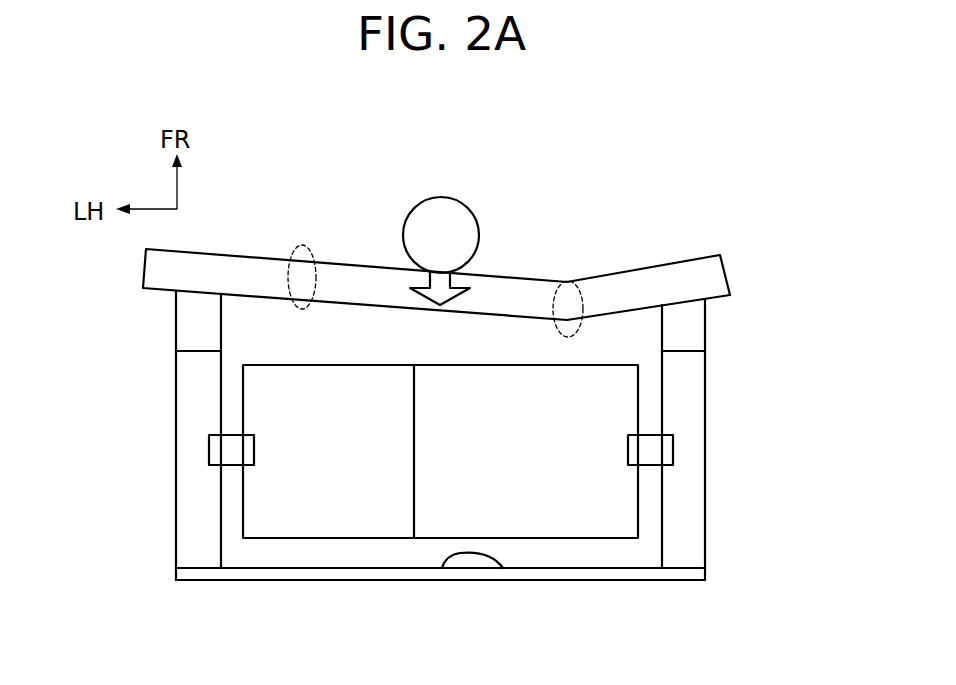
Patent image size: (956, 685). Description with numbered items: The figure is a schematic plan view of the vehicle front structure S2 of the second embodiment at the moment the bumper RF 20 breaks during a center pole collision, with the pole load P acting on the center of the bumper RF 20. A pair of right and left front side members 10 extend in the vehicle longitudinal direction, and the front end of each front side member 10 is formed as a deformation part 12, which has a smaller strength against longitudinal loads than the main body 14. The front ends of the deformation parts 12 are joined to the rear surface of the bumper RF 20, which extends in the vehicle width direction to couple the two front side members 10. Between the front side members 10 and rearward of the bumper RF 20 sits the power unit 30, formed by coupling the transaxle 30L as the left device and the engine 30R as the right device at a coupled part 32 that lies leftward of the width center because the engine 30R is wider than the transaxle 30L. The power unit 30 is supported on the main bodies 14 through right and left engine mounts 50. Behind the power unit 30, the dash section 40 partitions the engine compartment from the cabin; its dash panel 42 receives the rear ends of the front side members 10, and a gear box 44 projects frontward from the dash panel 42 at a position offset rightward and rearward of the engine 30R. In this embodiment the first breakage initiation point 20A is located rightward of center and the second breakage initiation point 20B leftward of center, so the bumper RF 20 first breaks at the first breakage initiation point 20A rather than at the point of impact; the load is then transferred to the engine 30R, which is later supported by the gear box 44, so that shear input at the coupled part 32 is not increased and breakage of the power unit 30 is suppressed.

The vehicle front structure S2 is at (750, 209).
The load / pressing force P is at (470, 203).
The front side member 10 is at (176, 388).
The deformation part 12 is at (176, 316).
The main body 14 is at (176, 480).
The bumper RF 20 is at (658, 265).
The first breakage initiation point 20A is at (568, 278).
The second breakage initiation point 20B is at (297, 248).
The power unit 30 is at (383, 364).
The transaxle 30L is at (322, 451).
The engine 30R is at (507, 451).
The coupled part 32 is at (417, 428).
The dash section 40 is at (328, 581).
The dash panel 42 is at (583, 580).
The gear box 44 is at (446, 566).
The engine mount 50 is at (208, 452).